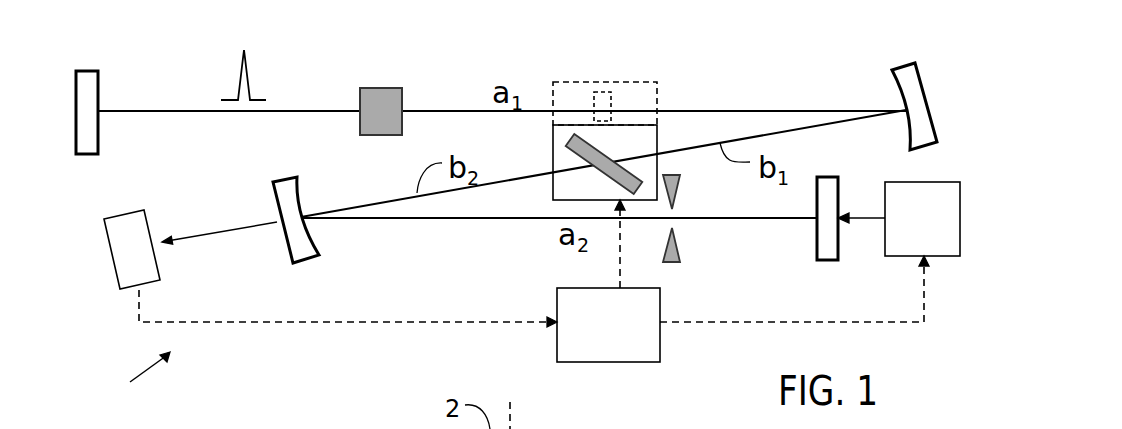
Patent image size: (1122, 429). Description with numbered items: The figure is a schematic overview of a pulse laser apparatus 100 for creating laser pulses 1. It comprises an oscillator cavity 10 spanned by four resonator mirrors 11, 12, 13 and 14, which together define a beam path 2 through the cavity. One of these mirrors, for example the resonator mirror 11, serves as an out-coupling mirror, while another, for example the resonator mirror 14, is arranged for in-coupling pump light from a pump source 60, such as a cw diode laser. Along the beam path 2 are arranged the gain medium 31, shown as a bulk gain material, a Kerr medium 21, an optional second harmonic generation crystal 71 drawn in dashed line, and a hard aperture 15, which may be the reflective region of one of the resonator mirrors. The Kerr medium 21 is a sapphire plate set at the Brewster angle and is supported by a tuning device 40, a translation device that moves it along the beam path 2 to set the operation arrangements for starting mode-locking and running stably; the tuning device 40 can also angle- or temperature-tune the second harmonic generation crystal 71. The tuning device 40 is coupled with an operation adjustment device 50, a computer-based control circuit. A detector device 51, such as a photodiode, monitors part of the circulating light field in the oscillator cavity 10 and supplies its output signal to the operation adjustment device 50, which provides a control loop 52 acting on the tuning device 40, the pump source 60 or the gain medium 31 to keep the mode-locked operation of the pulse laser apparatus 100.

The laser pulses 1 is at (245, 62).
The beam path 2 is at (468, 109).
The oscillator cavity 10 is at (362, 172).
The resonator mirror 11 is at (97, 90).
The resonator mirror 12 is at (890, 72).
The resonator mirror 13 is at (278, 205).
The resonator mirror 14 is at (833, 190).
The hard aperture 15 is at (678, 240).
The Kerr medium 21 is at (598, 148).
The gain medium 31 is at (361, 100).
The tuning device 40 is at (660, 131).
The operation adjustment device 50 is at (564, 303).
The detector device 51 is at (122, 262).
The control loop 52 is at (415, 313).
The pump source 60 is at (918, 246).
The second harmonic generation crystal 71 is at (594, 100).
The pulse laser apparatus 100 is at (123, 410).